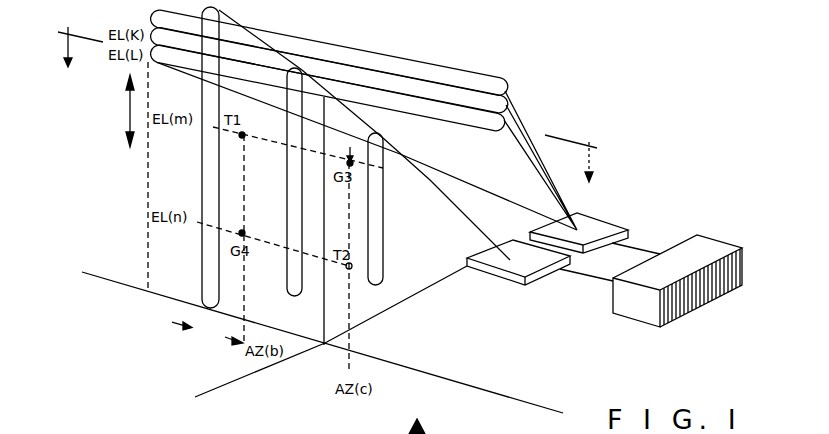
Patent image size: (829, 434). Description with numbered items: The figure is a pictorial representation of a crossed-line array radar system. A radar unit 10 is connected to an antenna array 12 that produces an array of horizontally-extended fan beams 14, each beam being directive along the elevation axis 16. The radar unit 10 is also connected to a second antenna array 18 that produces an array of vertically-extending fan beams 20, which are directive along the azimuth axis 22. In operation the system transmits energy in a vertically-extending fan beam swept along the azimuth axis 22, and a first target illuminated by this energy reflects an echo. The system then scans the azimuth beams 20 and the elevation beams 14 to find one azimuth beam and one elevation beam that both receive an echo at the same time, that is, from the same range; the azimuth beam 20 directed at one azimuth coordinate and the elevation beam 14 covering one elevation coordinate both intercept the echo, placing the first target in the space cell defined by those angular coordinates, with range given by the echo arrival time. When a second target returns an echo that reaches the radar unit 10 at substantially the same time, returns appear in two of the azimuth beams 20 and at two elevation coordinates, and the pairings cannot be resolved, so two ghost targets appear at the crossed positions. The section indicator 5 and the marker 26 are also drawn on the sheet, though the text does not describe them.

The section line of FIG. 5 is at (327, 95).
The radar unit 10 is at (717, 248).
The antenna array 12 is at (598, 229).
The horizontally-extended fan beams 14 is at (514, 134).
The elevation axis 16 is at (128, 114).
The antenna array 18 is at (528, 266).
The vertically-extending fan beams 20 is at (296, 294).
The azimuth axis 22 is at (200, 330).
The observer viewpoint 26 is at (410, 421).